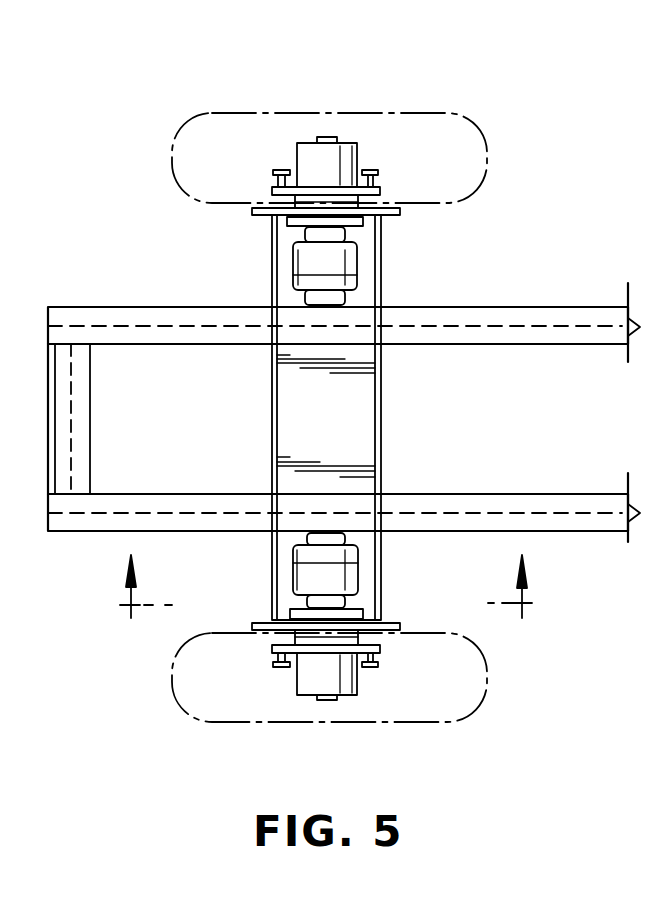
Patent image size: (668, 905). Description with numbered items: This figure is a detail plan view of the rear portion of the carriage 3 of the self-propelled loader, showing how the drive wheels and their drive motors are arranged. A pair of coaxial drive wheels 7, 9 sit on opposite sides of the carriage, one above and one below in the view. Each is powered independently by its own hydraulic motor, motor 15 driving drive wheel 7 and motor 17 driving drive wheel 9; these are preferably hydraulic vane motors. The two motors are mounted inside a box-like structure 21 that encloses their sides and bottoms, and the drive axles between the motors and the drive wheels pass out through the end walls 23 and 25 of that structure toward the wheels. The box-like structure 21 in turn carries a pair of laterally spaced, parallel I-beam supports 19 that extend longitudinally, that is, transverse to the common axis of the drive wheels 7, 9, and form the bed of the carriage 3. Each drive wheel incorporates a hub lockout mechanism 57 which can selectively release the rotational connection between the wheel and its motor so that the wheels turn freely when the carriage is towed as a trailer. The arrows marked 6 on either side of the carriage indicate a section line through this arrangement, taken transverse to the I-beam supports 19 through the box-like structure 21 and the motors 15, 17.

The carriage 3 is at (562, 306).
The section line 6- 6 is at (324, 586).
The drive wheel 7 is at (242, 710).
The drive wheel 9 is at (433, 120).
The hydraulic motor 15 is at (358, 573).
The hydraulic motor 17 is at (357, 262).
The I-beam supports 19 is at (181, 493).
The box-like structure 21 is at (382, 460).
The end wall 23 is at (270, 612).
The end wall 25 is at (272, 223).
The hub lockout mechanism 57 is at (343, 145).